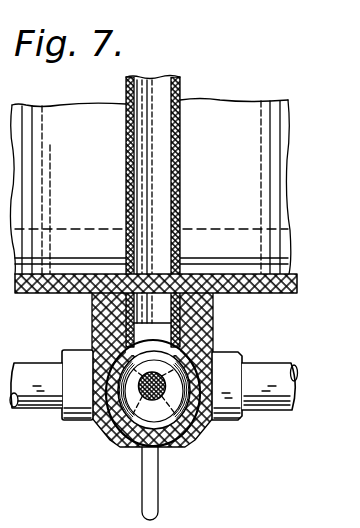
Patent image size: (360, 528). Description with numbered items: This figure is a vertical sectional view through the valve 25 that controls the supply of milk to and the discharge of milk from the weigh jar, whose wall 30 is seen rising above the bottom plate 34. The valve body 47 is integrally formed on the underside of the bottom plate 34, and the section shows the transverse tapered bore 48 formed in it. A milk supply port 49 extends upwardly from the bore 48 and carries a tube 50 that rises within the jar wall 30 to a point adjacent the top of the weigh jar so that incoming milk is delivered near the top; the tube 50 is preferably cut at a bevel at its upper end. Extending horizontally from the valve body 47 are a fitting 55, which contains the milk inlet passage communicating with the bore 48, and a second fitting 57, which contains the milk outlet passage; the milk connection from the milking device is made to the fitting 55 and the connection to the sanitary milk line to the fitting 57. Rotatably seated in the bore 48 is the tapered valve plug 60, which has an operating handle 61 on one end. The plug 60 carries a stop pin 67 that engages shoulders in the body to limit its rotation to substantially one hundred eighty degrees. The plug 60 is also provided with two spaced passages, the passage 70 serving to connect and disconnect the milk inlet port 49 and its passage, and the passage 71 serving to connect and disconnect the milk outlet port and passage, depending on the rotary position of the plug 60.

The outer tube 30 is at (290, 168).
The tube 50 is at (181, 163).
The bottom plate 34 is at (282, 290).
The valve body 47 is at (190, 328).
The tapered bore 48 is at (190, 352).
The milk supply port 49 is at (133, 330).
The valve 25 is at (100, 437).
The plug passage 71 is at (106, 433).
The plug passage 70 is at (176, 443).
The stop pin 67 is at (141, 425).
The operating handle 61 is at (159, 487).
The fitting 57 is at (75, 410).
The valve plug 60 is at (198, 425).
The fitting 55 is at (231, 422).